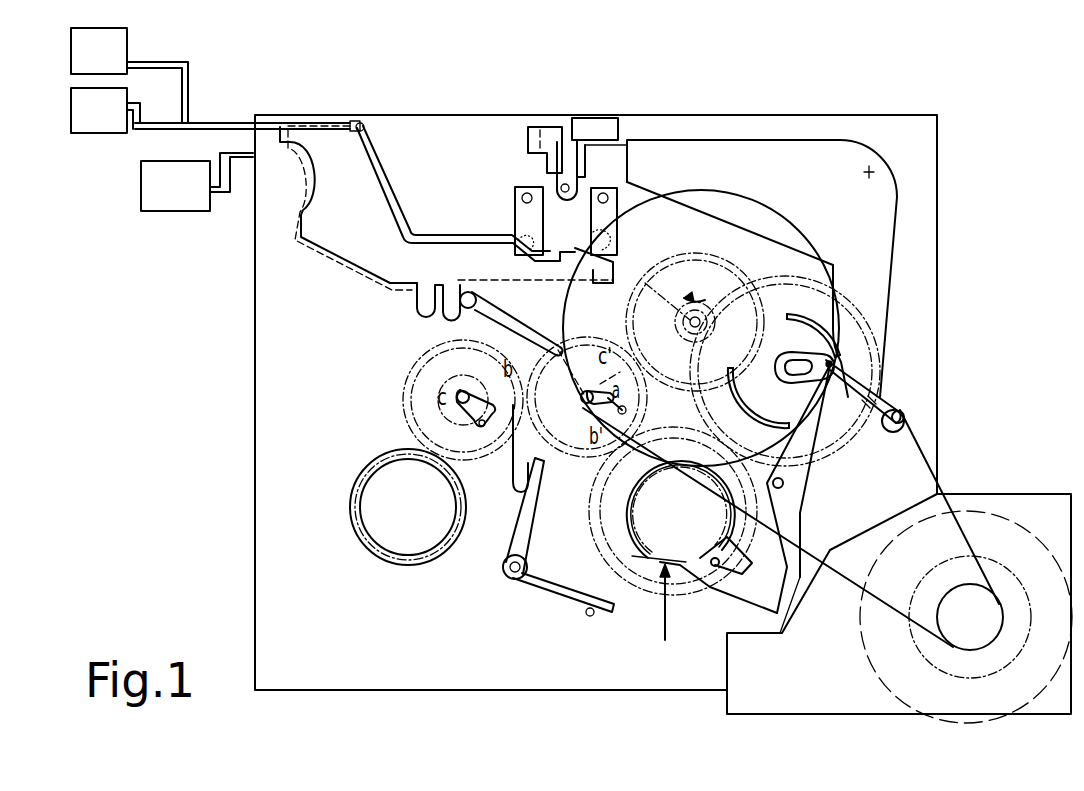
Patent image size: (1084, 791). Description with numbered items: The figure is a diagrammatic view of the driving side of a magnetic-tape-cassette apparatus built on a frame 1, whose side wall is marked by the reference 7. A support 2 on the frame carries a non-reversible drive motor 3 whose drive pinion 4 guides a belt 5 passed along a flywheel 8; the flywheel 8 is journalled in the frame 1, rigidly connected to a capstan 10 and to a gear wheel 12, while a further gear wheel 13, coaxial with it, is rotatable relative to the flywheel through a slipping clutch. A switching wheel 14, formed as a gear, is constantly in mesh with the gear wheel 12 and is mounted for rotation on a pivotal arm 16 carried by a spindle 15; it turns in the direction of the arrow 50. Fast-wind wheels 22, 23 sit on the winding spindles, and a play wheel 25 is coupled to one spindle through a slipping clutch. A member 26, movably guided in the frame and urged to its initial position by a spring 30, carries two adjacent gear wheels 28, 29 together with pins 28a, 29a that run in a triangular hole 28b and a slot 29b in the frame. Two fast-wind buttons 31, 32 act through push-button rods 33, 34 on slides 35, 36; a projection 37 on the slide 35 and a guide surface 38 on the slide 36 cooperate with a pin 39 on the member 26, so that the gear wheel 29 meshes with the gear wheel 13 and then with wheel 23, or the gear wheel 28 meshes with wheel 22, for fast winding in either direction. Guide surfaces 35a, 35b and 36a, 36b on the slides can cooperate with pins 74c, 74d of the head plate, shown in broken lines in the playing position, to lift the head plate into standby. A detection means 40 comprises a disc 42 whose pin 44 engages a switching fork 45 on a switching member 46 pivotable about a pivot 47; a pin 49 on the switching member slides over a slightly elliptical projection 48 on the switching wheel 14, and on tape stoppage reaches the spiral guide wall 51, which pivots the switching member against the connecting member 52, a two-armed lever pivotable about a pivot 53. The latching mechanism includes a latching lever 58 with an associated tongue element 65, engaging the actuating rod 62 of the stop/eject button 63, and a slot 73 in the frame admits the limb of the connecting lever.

The frame 1 is at (512, 692).
The support 2 is at (806, 694).
The drive motor 3 is at (958, 722).
The drive pinion 4 is at (980, 628).
The belt 5 is at (922, 448).
The side wall 7 is at (256, 322).
The flywheel 8 is at (740, 225).
The capstan 10 is at (660, 310).
The gear wheel 12 is at (660, 278).
The further gear wheel 13 is at (712, 260).
The switching wheel 14 is at (870, 378).
The spindle 15 is at (890, 432).
The pivotal arm 16 is at (905, 400).
The fast-wind wheel 22 is at (350, 512).
The fast-wind wheel 23 is at (618, 512).
The play wheel 25 is at (600, 542).
The member 26 is at (556, 332).
The gear wheel 28 is at (405, 415).
The pin 28a is at (466, 390).
The triangular hole 28b is at (480, 427).
The gear wheel 29 is at (645, 398).
The pin 29a is at (581, 395).
The slot 29b is at (630, 378).
The spring 30 is at (576, 600).
The fast-wind button 31 is at (71, 56).
The fast-wind button 32 is at (71, 112).
The push-button rod 33 is at (248, 122).
The push-button rod 34 is at (230, 130).
The slide 35 is at (318, 182).
The guide surface 35a is at (527, 257).
The guide surface 35b is at (592, 282).
The slide 36 is at (378, 166).
The guide surface 36a is at (520, 240).
The guide surface 36b is at (614, 245).
The projection 37 is at (425, 318).
The guide surface 38 is at (418, 300).
The pin 39 is at (478, 300).
The detection means 40 is at (662, 617).
The disc 42 is at (650, 528).
The pin 44 is at (714, 556).
The switching fork 45 is at (758, 590).
The switching member 46 is at (812, 475).
The pivot 47 is at (784, 484).
The projection 48 is at (805, 354).
The pin 49 is at (848, 370).
The arrow 50 is at (772, 300).
The spiral guide wall 51 is at (780, 386).
The connecting member 52 is at (782, 158).
The pivot 53 is at (872, 182).
The latching lever 58 is at (590, 125).
The actuating rod 62 is at (222, 190).
The stop/eject button 63 is at (141, 188).
The switch tongue 65 is at (568, 194).
The slot 73 is at (532, 127).
The pin 74c is at (527, 193).
The pin 74d is at (606, 197).